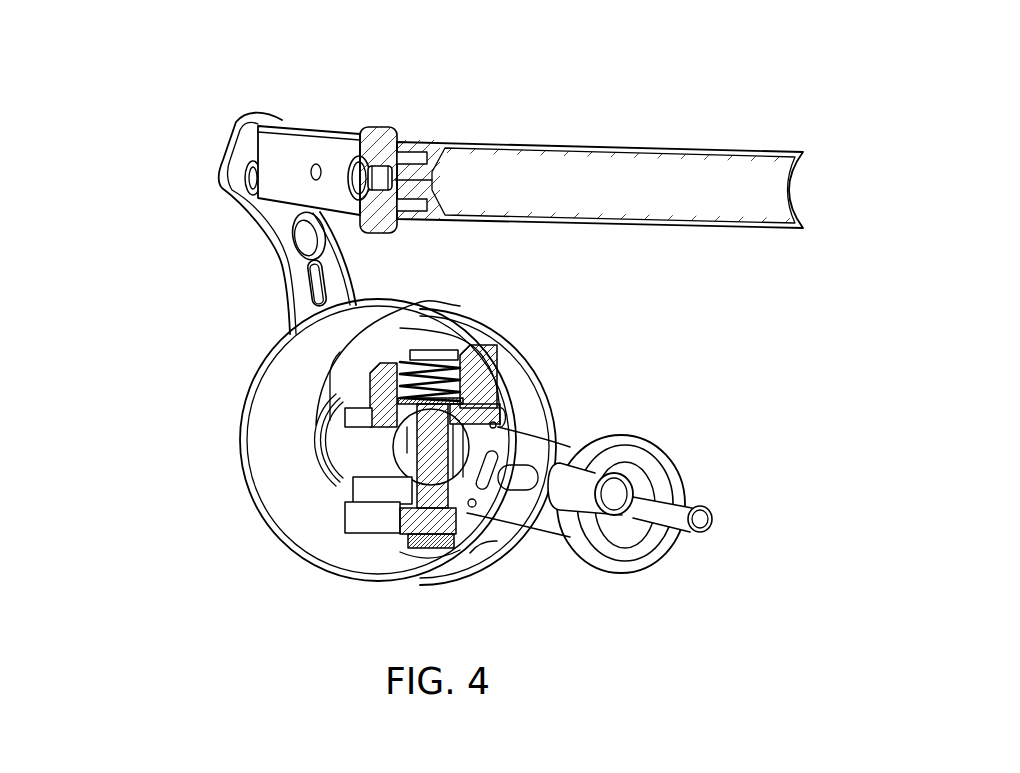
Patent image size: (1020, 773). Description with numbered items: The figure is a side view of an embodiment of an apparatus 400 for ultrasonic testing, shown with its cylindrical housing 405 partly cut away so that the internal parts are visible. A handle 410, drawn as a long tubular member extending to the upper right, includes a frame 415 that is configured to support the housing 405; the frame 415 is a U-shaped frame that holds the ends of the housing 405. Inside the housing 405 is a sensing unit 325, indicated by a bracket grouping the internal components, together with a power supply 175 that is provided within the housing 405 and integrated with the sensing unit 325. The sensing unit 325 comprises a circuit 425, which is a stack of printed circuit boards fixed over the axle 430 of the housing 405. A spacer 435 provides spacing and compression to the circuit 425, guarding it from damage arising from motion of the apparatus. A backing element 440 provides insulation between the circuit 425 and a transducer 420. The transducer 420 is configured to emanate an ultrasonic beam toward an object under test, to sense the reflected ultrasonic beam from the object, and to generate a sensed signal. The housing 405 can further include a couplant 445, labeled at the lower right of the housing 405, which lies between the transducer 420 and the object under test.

The apparatus 400 is at (205, 60).
The housing 405 is at (290, 358).
The handle 410 is at (731, 148).
The frame 415 is at (250, 110).
The sensing unit 325 is at (160, 622).
The circuit 425 is at (363, 414).
The axle 430 is at (357, 450).
The spacer 435 is at (363, 493).
The transducer 420 is at (357, 519).
The backing element 440 is at (340, 540).
The power supply 175 is at (397, 540).
The couplant 445 is at (475, 546).